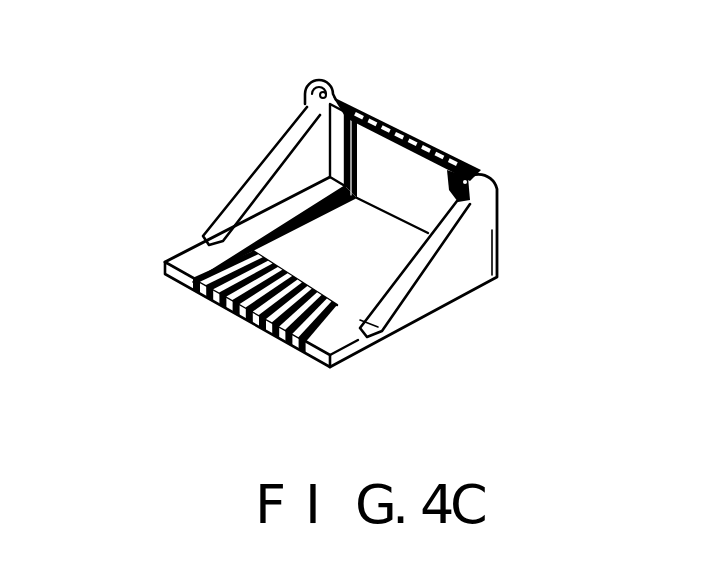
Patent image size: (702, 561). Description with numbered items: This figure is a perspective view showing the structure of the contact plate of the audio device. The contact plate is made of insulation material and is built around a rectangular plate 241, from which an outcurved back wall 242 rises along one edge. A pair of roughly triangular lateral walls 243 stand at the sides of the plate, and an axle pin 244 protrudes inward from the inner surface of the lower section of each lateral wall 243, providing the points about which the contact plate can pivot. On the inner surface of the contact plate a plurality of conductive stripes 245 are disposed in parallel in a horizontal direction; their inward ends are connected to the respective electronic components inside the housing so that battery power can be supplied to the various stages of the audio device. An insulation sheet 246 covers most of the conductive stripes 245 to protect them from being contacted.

The rectangular plate 241 is at (326, 368).
The outcurved back wall 242 is at (420, 114).
The lateral walls 243 is at (245, 153).
The axle pin 244 is at (337, 98).
The conductive stripes 245 is at (203, 303).
The insulation sheet 246 is at (413, 178).